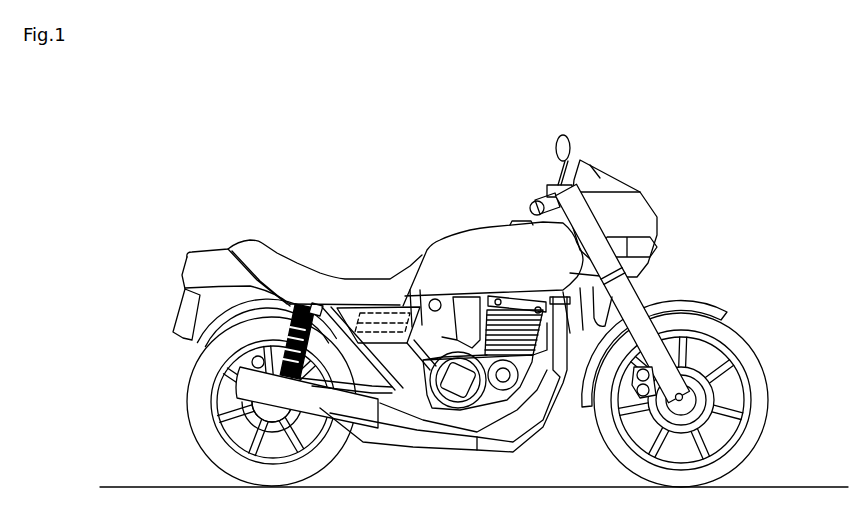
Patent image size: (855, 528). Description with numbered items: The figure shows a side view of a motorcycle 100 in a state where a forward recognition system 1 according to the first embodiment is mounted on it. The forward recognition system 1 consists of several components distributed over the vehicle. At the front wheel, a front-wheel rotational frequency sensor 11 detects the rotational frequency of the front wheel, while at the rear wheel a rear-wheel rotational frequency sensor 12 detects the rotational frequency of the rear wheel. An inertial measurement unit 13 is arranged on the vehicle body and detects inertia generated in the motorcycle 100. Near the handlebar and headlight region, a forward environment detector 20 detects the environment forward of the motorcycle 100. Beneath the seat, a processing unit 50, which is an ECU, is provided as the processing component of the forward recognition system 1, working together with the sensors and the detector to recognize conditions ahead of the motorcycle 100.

The forward recognition system 1 is at (287, 136).
The motorcycle 100 is at (747, 100).
The front-wheel rotational frequency sensor 11 is at (684, 322).
The rear-wheel rotational frequency sensor 12 is at (288, 312).
The inertial measurement unit 13 is at (368, 318).
The forward environment detector 20 is at (560, 155).
The processing unit 50 is at (404, 318).